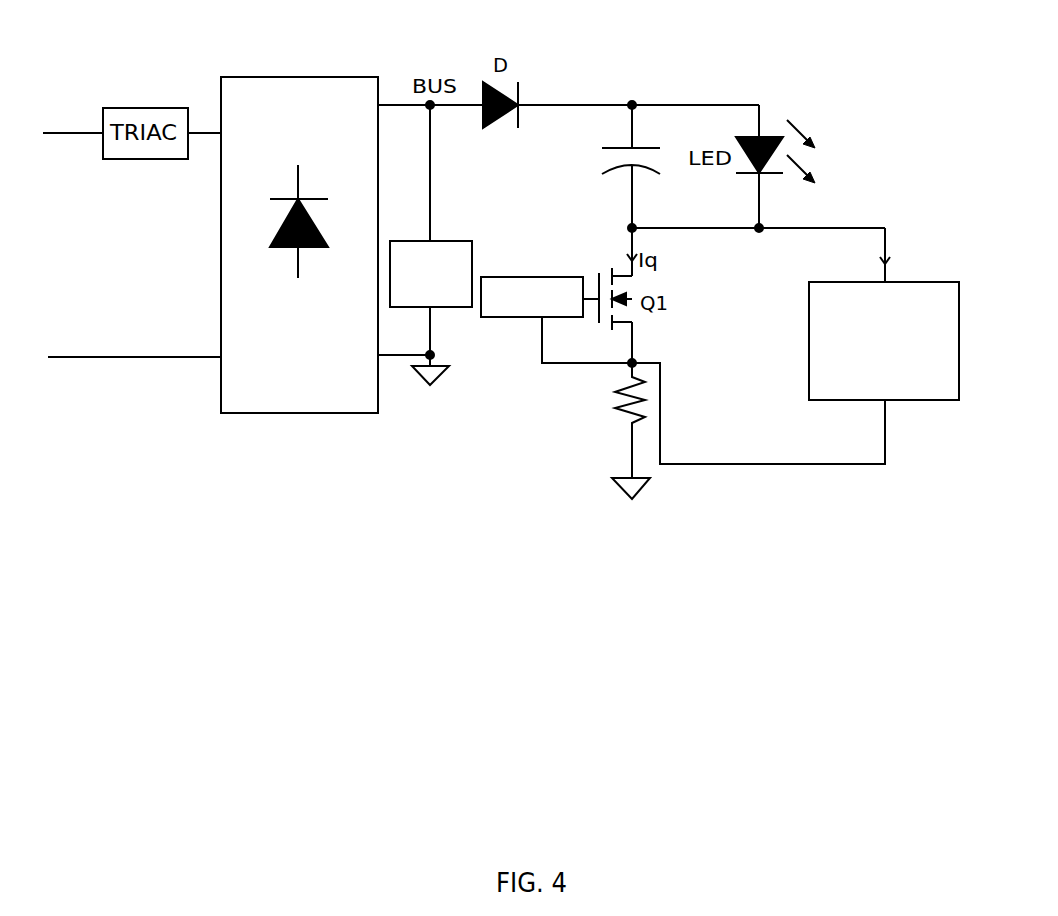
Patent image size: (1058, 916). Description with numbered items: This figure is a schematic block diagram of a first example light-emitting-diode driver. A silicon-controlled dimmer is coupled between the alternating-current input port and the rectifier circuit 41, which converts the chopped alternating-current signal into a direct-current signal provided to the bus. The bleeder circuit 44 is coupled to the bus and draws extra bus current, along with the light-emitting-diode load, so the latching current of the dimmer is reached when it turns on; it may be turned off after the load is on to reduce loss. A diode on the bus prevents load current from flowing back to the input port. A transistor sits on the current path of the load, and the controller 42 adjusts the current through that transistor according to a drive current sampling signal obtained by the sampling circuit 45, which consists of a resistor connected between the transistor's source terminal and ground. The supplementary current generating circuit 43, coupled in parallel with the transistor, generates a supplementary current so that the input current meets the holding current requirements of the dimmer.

The rectifier circuit 41 is at (268, 77).
The controller 42 is at (533, 318).
The supplementary current generating circuit 43 is at (858, 402).
The bleeder circuit 44 is at (438, 241).
The sampling circuit 45 is at (600, 428).